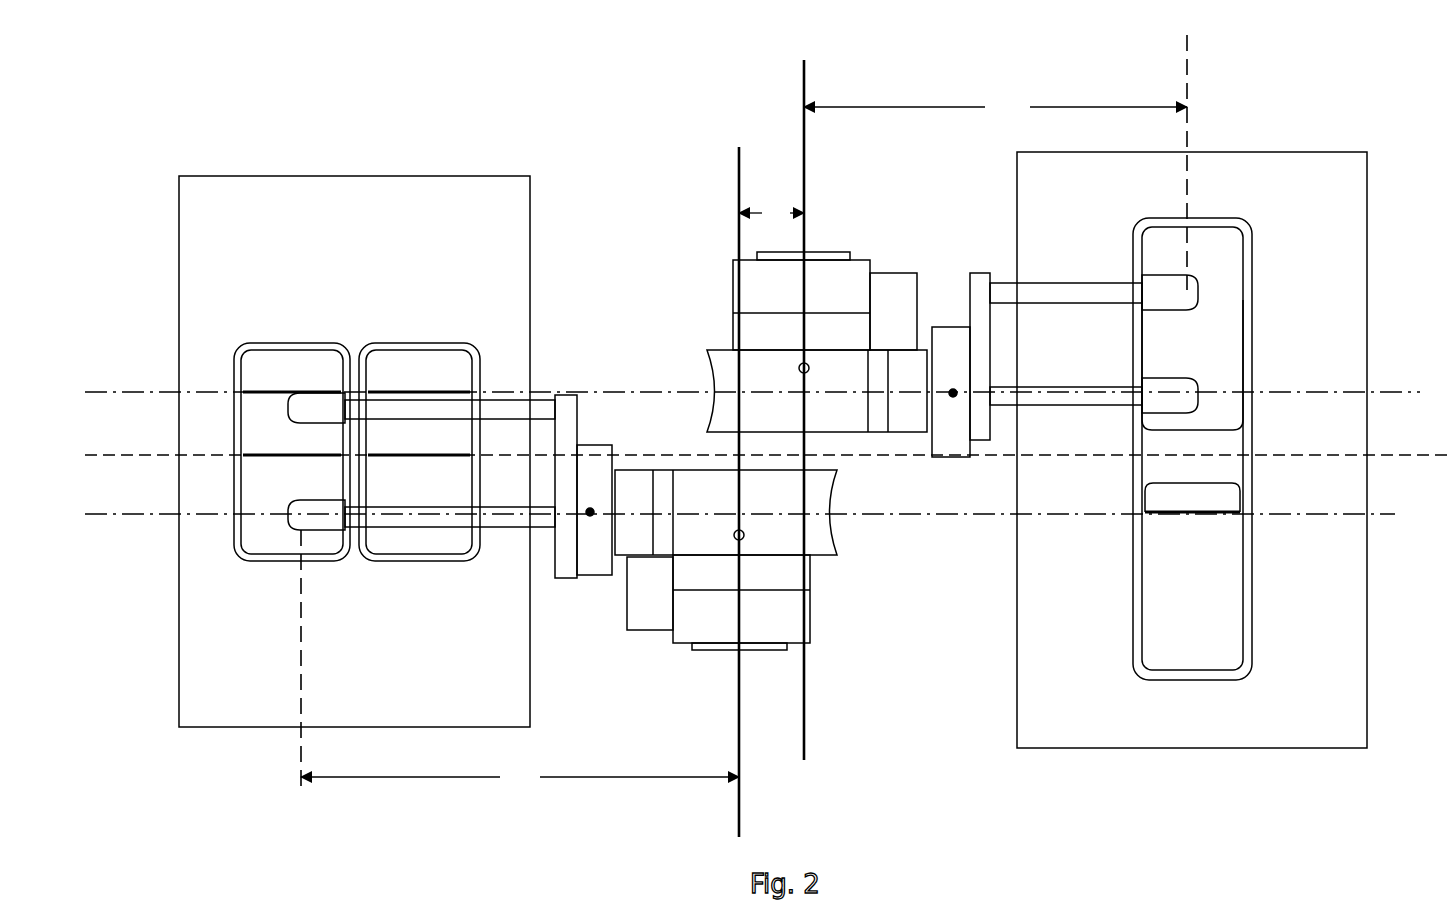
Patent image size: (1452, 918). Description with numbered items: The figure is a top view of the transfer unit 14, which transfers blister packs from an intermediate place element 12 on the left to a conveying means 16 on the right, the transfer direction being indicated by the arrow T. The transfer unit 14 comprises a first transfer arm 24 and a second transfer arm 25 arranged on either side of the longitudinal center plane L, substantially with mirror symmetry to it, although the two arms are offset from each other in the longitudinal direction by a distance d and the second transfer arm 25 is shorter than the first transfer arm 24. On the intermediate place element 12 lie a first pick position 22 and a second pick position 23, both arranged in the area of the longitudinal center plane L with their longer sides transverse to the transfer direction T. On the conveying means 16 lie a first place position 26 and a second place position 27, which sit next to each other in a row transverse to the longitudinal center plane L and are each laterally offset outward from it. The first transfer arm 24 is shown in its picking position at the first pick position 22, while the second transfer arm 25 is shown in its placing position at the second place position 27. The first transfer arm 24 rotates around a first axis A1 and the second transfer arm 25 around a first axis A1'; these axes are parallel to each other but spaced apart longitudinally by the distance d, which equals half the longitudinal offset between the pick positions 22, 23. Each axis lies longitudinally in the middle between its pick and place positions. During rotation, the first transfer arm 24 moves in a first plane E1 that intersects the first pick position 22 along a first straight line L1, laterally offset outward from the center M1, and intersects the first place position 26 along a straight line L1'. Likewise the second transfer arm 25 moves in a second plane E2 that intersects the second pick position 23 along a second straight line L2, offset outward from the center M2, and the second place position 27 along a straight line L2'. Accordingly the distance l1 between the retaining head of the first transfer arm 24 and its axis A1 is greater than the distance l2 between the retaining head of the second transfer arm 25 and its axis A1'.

The intermediate place element 12 is at (218, 623).
The transfer unit 14 is at (711, 110).
The conveying means 16 is at (1057, 672).
The first pick position 22 is at (270, 345).
The second pick position 23 is at (448, 347).
The first transfer arm 24 is at (693, 618).
The second transfer arm 25 is at (838, 283).
The first place position 26 is at (1245, 582).
The second place position 27 is at (1247, 253).
The center of the first pick position M1 is at (268, 455).
The center of the second pick position M2 is at (397, 455).
The first straight line L1 is at (205, 654).
The second straight line L2 is at (416, 234).
The straight line L1' is at (1230, 667).
The straight line L2' is at (1229, 214).
The first plane E1 is at (890, 520).
The second plane E2 is at (592, 392).
The first axis of the first transfer arm A1 is at (702, 494).
The first axis of the second transfer arm A1' is at (850, 413).
The longitudinal center plane L is at (1415, 455).
The transfer direction T is at (623, 54).
The distance d is at (771, 214).
The distance l1 is at (520, 779).
The distance l2 is at (995, 108).